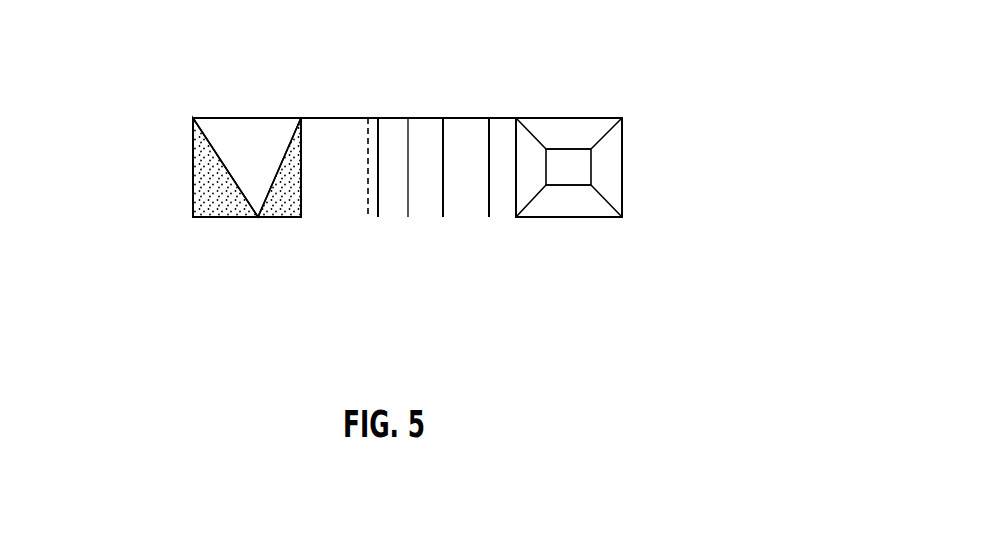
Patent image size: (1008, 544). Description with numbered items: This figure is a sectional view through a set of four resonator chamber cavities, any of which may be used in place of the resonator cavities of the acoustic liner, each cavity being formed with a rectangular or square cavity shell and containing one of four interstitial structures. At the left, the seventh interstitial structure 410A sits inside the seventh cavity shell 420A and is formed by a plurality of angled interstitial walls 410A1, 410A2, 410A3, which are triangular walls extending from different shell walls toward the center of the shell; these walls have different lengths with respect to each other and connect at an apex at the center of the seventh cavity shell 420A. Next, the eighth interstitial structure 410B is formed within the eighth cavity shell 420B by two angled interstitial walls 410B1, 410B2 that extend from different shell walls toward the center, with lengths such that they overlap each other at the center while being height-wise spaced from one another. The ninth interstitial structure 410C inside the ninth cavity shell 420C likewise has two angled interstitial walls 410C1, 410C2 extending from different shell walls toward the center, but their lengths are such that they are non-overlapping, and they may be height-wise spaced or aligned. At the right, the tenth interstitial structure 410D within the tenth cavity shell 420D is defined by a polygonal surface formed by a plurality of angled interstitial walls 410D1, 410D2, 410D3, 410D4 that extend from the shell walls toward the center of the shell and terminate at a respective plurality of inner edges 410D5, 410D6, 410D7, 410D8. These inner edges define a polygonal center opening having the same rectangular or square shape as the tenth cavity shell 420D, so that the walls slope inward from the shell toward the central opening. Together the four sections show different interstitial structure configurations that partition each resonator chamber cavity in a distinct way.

The seventh interstitial structure 410A is at (205, 218).
The angled interstitial wall 410A1 is at (259, 218).
The angled interstitial wall 410A2 is at (207, 195).
The angled interstitial wall 410A3 is at (228, 127).
The seventh cavity shell 420A is at (227, 118).
The eighth interstitial structure 410B is at (362, 218).
The angled interstitial wall 410B1 is at (330, 208).
The angled interstitial wall 410B2 is at (390, 193).
The eighth cavity shell 420B is at (337, 128).
The ninth interstitial structure 410C is at (507, 200).
The angled interstitial wall 410C1 is at (505, 195).
The angled interstitial wall 410C2 is at (420, 128).
The ninth cavity shell 420C is at (460, 118).
The tenth interstitial structure 410D is at (605, 210).
The angled interstitial wall 410D1 is at (542, 188).
The angled interstitial wall 410D2 is at (615, 203).
The angled interstitial wall 410D3 is at (591, 204).
The angled interstitial wall 410D4 is at (605, 118).
The inner edge 410D5 is at (597, 150).
The inner edge 410D6 is at (562, 148).
The inner edge 410D7 is at (547, 180).
The inner edge 410D8 is at (572, 187).
The tenth cavity shell 420D is at (583, 118).